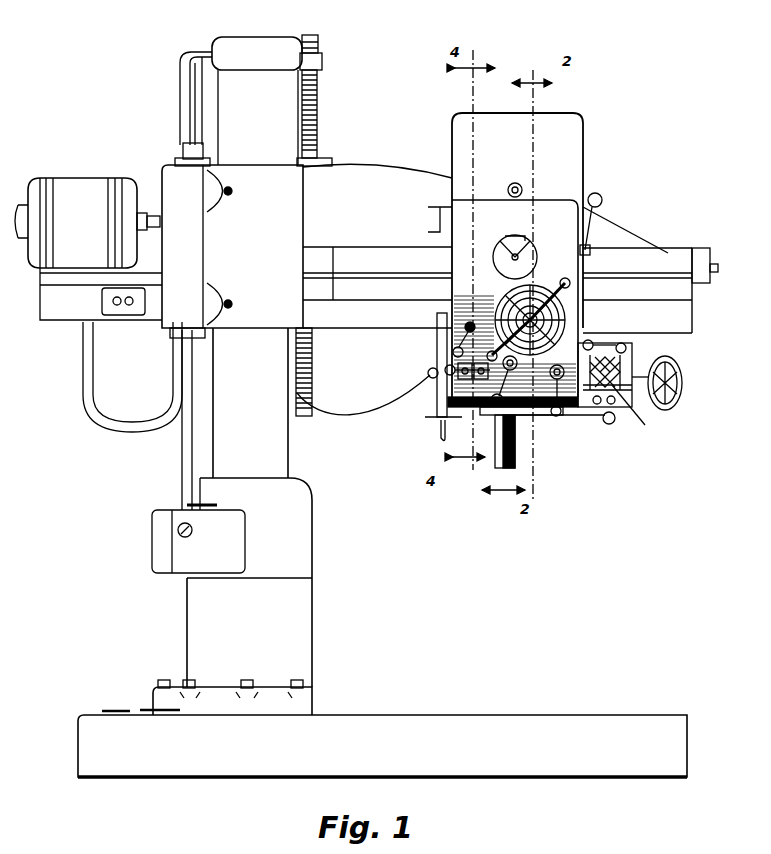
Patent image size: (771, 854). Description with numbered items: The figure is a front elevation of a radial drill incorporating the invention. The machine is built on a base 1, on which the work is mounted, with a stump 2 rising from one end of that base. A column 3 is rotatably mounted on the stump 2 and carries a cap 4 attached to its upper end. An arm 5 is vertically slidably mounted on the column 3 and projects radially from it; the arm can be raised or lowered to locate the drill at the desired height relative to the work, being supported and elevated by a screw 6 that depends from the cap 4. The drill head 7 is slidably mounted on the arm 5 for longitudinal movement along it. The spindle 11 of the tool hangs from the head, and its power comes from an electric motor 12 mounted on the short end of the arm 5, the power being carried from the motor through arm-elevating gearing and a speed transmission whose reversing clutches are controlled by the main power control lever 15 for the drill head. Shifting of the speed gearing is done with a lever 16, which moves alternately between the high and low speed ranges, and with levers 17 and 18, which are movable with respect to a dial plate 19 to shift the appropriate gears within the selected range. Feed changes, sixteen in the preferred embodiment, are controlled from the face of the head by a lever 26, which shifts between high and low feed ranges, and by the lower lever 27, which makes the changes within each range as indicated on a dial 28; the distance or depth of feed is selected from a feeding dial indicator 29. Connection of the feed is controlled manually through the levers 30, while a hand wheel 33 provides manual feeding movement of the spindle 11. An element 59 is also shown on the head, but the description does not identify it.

The base 1 is at (510, 722).
The column sleeve 2 is at (290, 626).
The column 3 is at (277, 445).
The cap 4 is at (279, 45).
The radial arm 5 is at (383, 170).
The elevating screw 6 is at (318, 110).
The drill head 7 is at (570, 133).
The spindle 11 is at (518, 452).
The motor 12 is at (85, 192).
The knob 15 is at (614, 423).
The bracket 16 is at (605, 357).
The lever 17 is at (605, 348).
The control box 18 is at (634, 348).
The handwheel 19 is at (647, 397).
The control lever 26 is at (453, 350).
The control lever 27 is at (445, 369).
The control lever 28 is at (428, 378).
The feed handwheel 29 is at (540, 287).
The feed lever 30 is at (562, 278).
The stop rod 33 is at (436, 378).
The lever 59 is at (520, 412).